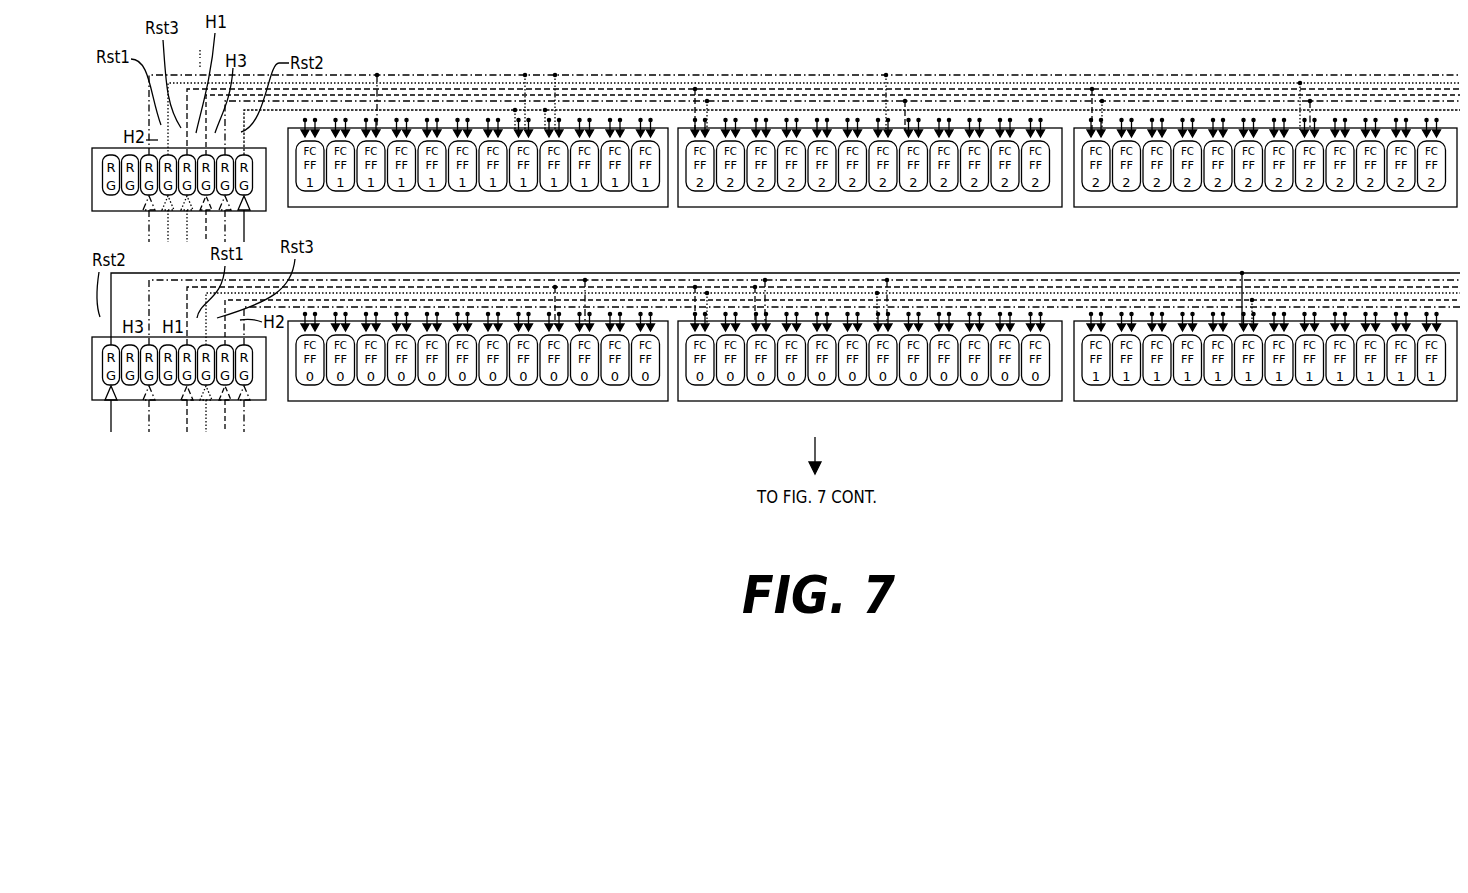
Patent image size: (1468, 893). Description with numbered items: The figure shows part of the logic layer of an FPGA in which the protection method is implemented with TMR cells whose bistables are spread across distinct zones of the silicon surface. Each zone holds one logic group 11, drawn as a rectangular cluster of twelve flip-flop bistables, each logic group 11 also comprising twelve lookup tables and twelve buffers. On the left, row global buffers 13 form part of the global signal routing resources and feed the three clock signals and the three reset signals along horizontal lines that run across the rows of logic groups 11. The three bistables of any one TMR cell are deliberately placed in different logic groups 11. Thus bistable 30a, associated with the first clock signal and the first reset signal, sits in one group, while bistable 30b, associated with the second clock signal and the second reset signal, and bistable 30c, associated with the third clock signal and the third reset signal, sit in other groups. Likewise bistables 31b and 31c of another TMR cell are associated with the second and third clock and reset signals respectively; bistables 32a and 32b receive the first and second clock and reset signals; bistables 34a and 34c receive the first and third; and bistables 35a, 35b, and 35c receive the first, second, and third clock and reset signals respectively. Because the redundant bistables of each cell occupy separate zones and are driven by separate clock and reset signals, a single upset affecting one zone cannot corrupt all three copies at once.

The logic group 11 is at (428, 208).
The row global buffer 13 is at (179, 305).
The bistable 30a is at (567, 328).
The bistable 30b is at (383, 130).
The bistable 30c is at (706, 130).
The bistable 31b is at (1256, 328).
The bistable 31c is at (1316, 130).
The bistable 32a is at (770, 328).
The bistable 32b is at (509, 130).
The bistable 34a is at (890, 328).
The bistable 34c is at (889, 130).
The bistable 35a is at (712, 328).
The bistable 35b is at (565, 130).
The bistable 35c is at (1100, 130).